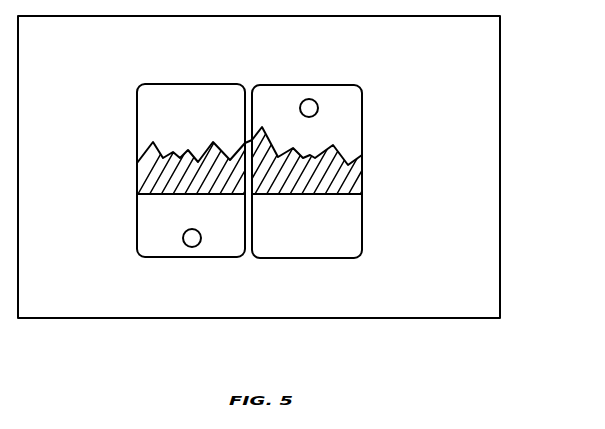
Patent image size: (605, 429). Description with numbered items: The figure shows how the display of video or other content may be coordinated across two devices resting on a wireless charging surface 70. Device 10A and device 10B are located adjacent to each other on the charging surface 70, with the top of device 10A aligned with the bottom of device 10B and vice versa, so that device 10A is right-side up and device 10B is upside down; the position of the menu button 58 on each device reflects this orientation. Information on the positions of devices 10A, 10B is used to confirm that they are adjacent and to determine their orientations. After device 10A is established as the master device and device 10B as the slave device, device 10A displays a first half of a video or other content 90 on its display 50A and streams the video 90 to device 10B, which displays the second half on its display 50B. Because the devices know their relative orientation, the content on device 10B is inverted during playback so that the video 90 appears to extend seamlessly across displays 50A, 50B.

The wireless charging surface 70 is at (490, 157).
The device 10A is at (228, 243).
The device 10B is at (317, 247).
The display 50A is at (158, 235).
The display 50B is at (342, 226).
The video 90 is at (163, 175).
The menu button 58 is at (192, 247).